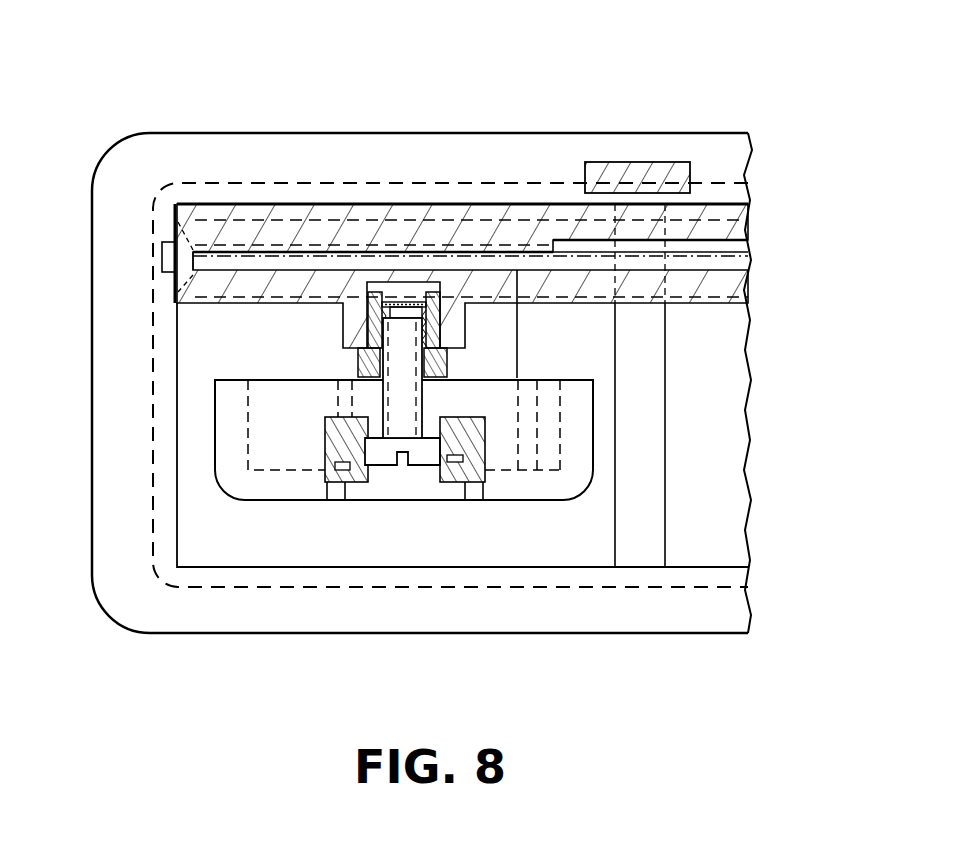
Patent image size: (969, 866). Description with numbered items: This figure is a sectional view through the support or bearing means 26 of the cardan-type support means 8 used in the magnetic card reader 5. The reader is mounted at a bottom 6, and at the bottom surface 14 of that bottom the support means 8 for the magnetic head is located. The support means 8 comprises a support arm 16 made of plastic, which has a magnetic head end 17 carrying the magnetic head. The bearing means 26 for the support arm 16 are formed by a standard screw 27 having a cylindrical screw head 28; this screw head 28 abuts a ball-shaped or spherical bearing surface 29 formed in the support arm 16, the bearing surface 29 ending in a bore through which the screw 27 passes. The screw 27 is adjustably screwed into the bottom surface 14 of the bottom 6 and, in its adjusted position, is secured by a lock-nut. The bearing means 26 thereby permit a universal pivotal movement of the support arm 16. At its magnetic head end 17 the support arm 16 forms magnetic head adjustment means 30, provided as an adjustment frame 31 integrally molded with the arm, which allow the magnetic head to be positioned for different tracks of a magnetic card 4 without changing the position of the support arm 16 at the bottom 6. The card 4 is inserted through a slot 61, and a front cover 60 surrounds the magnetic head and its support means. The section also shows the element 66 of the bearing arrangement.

The magnetic card reader 5 is at (552, 90).
The front cover 60 is at (258, 187).
The slot 61 is at (325, 257).
The bottom 6 is at (168, 297).
The magnetic card 4 is at (738, 260).
The bottom surface 14 is at (704, 306).
The nut 66 is at (363, 368).
The screw 27 is at (372, 390).
The support or bearing means 26 is at (436, 400).
The adjustment frame 31 is at (206, 410).
The support arm 16 is at (207, 473).
The magnetic head adjustment means 30 is at (622, 477).
The magnetic head end 17 is at (597, 473).
The cylindrical screw head 28 is at (373, 445).
The spherical bearing surface 29 is at (442, 450).
The cardan-type support means 8 is at (468, 515).